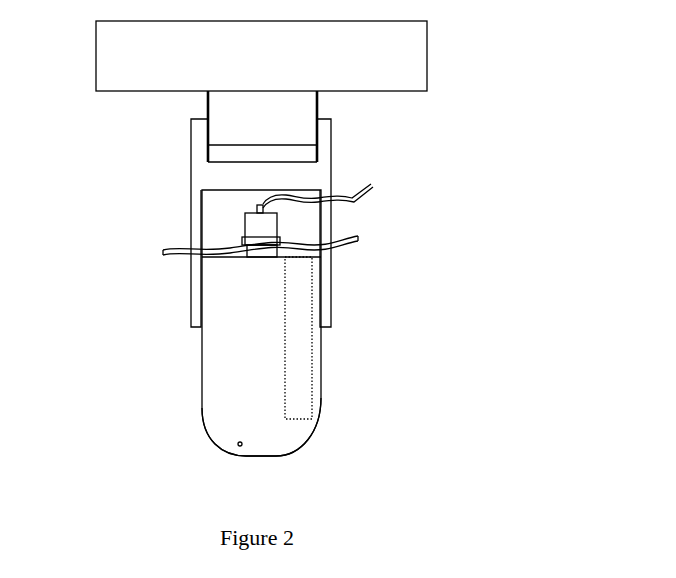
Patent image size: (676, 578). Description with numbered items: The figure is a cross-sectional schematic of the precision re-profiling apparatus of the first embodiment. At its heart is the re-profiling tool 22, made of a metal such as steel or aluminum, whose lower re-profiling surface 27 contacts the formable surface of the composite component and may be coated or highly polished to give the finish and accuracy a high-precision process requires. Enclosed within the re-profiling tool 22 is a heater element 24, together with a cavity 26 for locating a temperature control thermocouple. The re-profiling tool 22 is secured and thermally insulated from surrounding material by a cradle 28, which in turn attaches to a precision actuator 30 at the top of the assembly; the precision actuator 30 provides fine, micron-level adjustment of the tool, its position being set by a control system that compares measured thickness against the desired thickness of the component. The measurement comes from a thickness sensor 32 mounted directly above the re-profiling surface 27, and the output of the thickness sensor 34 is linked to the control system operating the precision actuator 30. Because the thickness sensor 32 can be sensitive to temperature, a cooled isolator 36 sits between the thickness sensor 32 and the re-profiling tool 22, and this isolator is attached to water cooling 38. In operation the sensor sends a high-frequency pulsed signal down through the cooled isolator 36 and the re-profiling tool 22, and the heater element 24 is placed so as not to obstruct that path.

The re-profiling tool 22 is at (217, 375).
The heater element 24 is at (302, 348).
The cavity 26 is at (238, 443).
The re-profiling surface 27 is at (277, 456).
The cradle 28 is at (325, 145).
The precision actuator 30 is at (411, 68).
The thickness sensor 32 is at (260, 225).
The output of the thickness sensor 34 is at (363, 195).
The cooled isolator 36 is at (255, 255).
The water cooling 38 is at (343, 247).